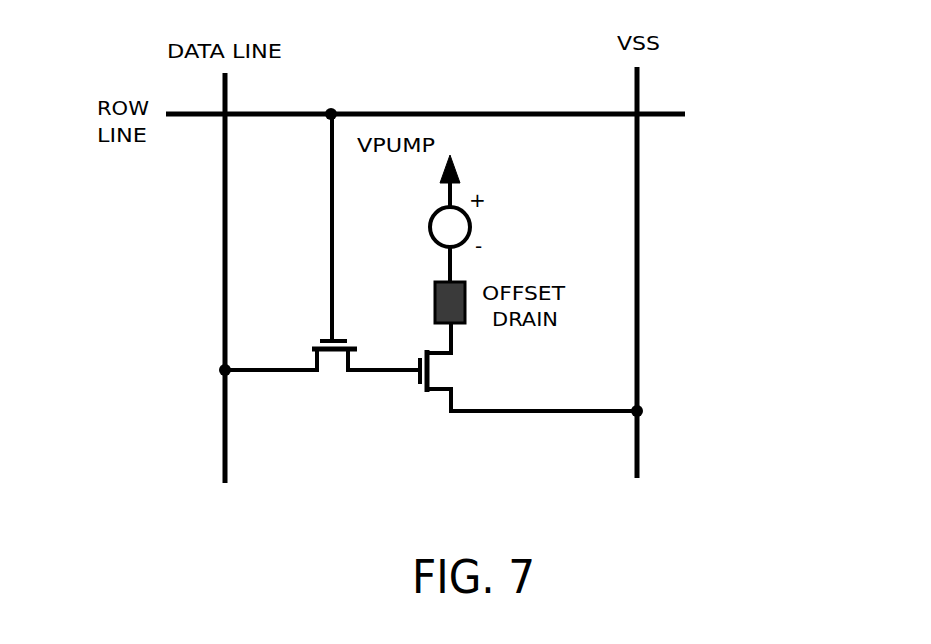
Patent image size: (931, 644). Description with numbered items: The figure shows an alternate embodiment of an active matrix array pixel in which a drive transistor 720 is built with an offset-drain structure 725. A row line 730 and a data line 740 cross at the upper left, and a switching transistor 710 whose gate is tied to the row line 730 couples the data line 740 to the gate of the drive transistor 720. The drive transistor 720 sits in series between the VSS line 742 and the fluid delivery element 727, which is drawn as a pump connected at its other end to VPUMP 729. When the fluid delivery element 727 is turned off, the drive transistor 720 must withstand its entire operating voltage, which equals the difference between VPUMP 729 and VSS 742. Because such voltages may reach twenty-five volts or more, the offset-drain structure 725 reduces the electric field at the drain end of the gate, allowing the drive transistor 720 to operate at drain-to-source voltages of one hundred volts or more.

The first transistor 710 is at (333, 352).
The transistor 720 is at (446, 386).
The offset-drain structure 725 is at (437, 318).
The fluid delivery element 727 is at (469, 237).
The VPUMP 729 is at (452, 174).
The row line 730 is at (665, 110).
The data line 740 is at (229, 460).
The VSS 742 is at (641, 457).